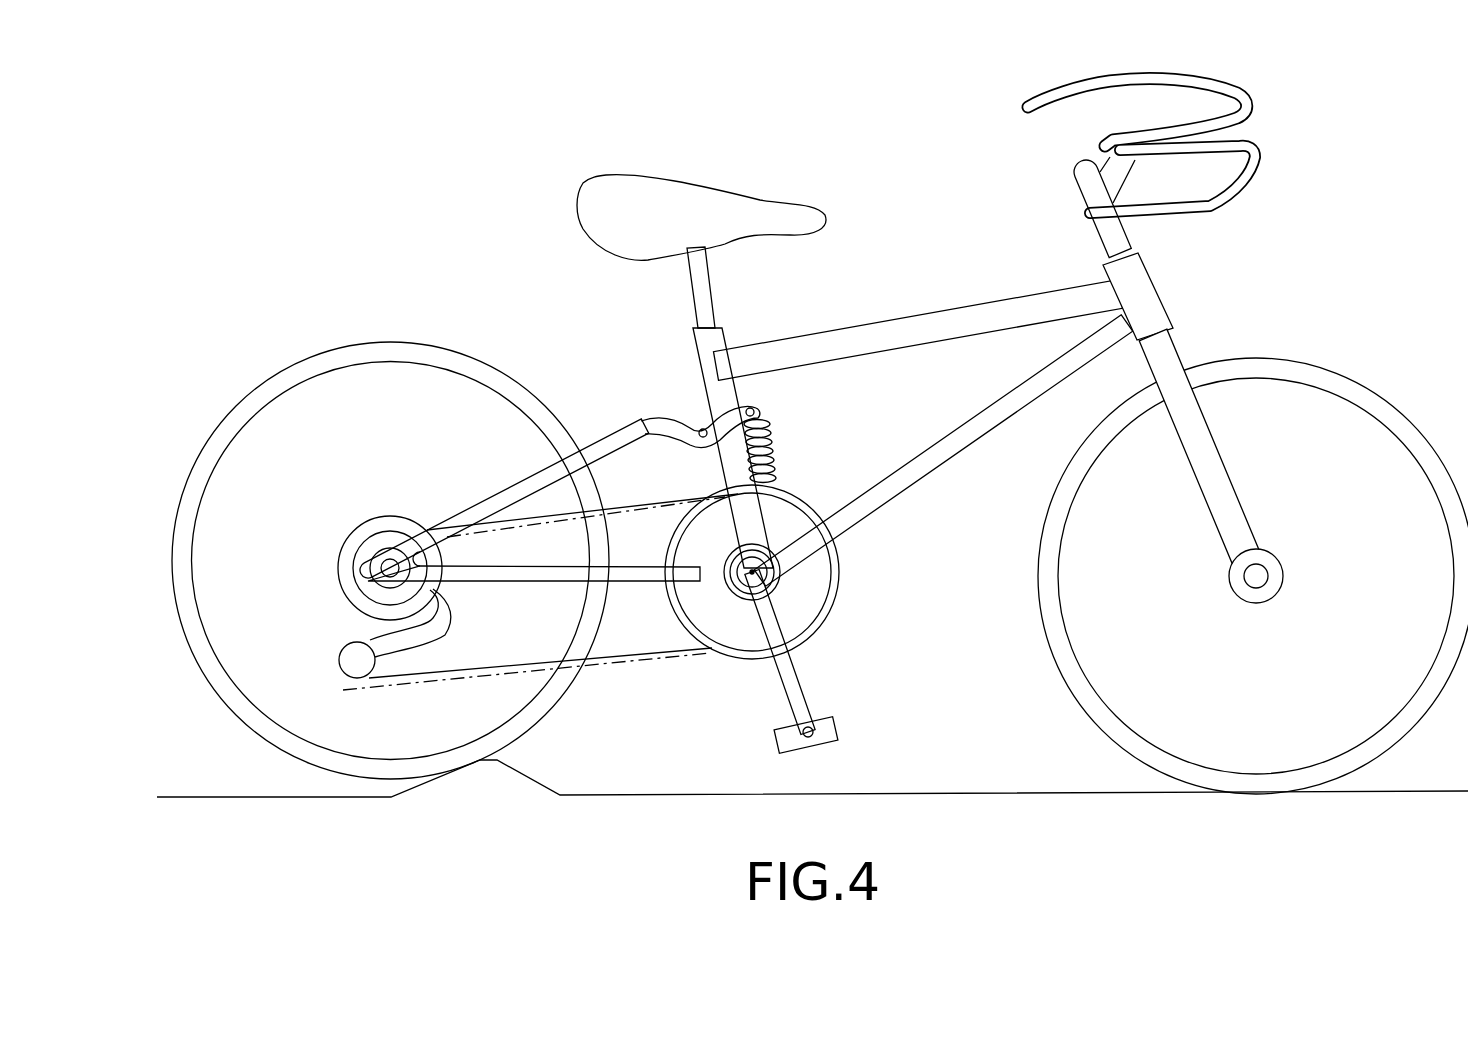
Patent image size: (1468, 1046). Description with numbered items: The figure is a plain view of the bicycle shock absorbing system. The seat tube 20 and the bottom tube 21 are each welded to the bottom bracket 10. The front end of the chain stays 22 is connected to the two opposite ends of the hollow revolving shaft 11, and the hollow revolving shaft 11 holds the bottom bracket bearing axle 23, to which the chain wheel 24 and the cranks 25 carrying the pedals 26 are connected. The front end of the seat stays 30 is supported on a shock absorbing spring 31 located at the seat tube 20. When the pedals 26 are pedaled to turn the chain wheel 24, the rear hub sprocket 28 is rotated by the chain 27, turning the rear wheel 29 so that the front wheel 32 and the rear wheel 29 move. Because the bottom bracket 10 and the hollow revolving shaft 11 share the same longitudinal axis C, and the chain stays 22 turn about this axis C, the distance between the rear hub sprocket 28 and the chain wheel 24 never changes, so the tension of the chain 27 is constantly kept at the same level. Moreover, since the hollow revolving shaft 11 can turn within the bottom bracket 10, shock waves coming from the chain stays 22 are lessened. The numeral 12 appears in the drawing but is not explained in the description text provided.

The bottom bracket 10 is at (738, 603).
The hollow revolving shaft 11 is at (728, 562).
The crank axle 12 is at (767, 547).
The seat tube 20 is at (713, 367).
The bottom tube 21 is at (999, 411).
The chain stays 22 is at (627, 581).
The bottom bracket bearing axle 23 is at (753, 578).
The chain wheel 24 is at (840, 555).
The cranks 25 is at (790, 693).
The pedals 26 is at (833, 727).
The chain 27 is at (589, 673).
The rear hub sprocket 28 is at (384, 537).
The rear wheel 29 is at (400, 350).
The seat stays 30 is at (618, 436).
The shock absorbing spring 31 is at (772, 443).
The front wheel 32 is at (1269, 366).
The longitudinal axis C is at (758, 572).